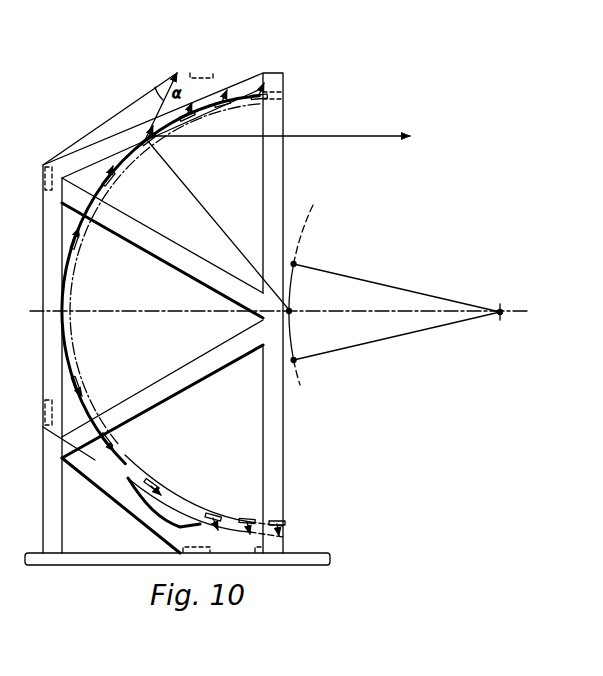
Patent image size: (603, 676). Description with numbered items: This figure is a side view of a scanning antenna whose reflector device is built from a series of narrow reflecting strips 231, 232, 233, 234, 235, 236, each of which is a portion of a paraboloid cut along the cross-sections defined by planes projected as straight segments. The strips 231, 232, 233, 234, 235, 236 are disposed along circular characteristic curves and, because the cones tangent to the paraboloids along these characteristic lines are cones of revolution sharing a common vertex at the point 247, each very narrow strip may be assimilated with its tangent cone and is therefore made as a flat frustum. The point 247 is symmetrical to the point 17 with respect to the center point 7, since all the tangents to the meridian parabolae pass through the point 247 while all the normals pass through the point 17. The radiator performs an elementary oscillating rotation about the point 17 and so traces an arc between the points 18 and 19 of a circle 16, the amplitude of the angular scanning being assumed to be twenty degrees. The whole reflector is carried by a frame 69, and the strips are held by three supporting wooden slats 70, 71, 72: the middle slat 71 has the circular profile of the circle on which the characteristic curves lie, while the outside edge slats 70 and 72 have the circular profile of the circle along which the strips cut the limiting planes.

The center point 7 is at (292, 310).
The circle 16 is at (318, 206).
The axis of rotation 17 is at (507, 302).
The arc end point 18 is at (297, 262).
The arc end point 19 is at (297, 361).
The frame 69 is at (168, 380).
The supporting wooden slat 70 is at (150, 525).
The supporting wooden slat 71 is at (163, 503).
The supporting wooden slat 72 is at (163, 477).
The strip 231 is at (255, 104).
The strip 232 is at (226, 112).
The strip 233 is at (192, 130).
The strip 234 is at (147, 152).
The strip 235 is at (116, 188).
The strip 236 is at (86, 252).
The common vertex point 247 is at (62, 311).